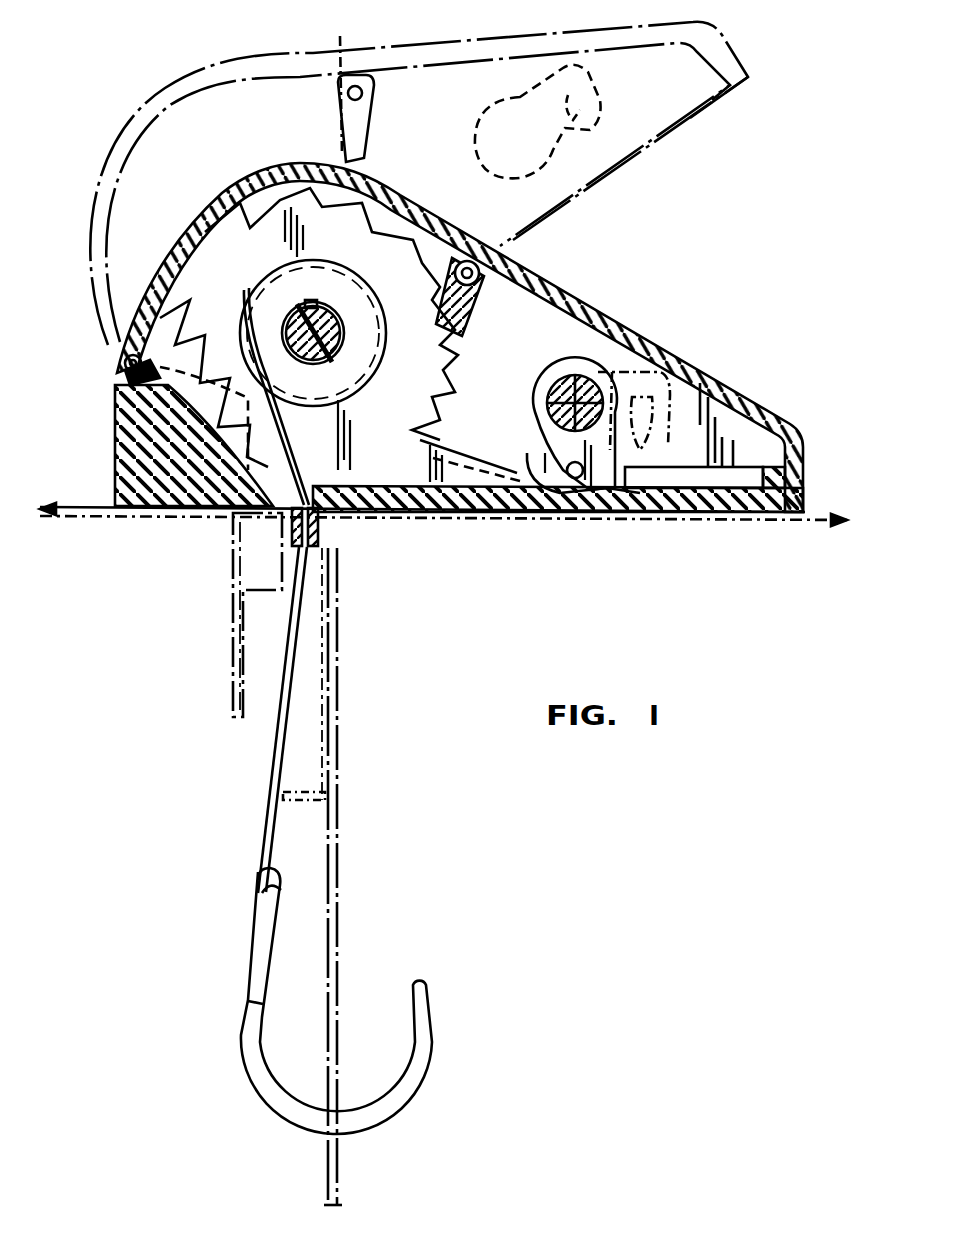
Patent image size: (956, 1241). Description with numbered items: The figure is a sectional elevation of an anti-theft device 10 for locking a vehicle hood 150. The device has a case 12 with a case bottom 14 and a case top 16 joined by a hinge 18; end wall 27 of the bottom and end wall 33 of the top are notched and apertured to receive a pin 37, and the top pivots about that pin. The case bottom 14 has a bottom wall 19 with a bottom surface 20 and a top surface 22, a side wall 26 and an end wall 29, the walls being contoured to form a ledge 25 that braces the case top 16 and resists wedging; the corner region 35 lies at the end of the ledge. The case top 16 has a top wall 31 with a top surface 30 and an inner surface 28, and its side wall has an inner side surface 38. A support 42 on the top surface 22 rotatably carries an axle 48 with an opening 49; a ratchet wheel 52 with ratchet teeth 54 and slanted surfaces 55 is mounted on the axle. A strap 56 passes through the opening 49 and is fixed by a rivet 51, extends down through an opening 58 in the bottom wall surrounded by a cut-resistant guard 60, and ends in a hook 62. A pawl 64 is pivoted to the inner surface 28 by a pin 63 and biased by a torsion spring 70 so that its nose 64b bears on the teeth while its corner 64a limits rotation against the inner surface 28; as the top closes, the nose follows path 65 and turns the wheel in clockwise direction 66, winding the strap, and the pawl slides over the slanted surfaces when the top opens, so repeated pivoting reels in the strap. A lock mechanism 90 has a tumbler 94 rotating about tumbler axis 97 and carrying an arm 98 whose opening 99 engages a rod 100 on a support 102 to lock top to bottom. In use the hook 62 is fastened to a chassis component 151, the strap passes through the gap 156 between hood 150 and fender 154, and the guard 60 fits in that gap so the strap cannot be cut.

The anti-theft device 10 is at (82, 148).
The case 12 is at (143, 513).
The case bottom 14 is at (113, 437).
The case top 16 is at (298, 55).
The hinge 18 is at (113, 350).
The bottom wall 19 is at (713, 500).
The bottom surface 20 is at (417, 517).
The top surface 22 is at (727, 467).
The ledge 25 is at (800, 485).
The side wall 26 is at (693, 503).
The end wall 27 is at (115, 397).
The inner surface 28 is at (608, 50).
The end wall 29 is at (782, 433).
The top surface 30 is at (590, 300).
The top wall 31 is at (623, 307).
The end wall 33 is at (133, 307).
The end wall corner 35 is at (798, 452).
The pin 37 is at (122, 362).
The inner side surface 38 is at (570, 317).
The support 42 is at (350, 473).
The axle 48 is at (340, 318).
The opening 49 is at (322, 358).
The rivet 51 is at (311, 300).
The ratchet wheel 52 is at (443, 370).
The ratchet teeth 54 is at (430, 397).
The slanted surfaces 55 is at (387, 197).
The strap 56 is at (247, 290).
The opening 58 is at (305, 478).
The guard 60 is at (290, 533).
The hook 62 is at (427, 1033).
The pin 63 is at (503, 247).
The pawl 64 is at (372, 130).
The corner 64a is at (470, 262).
The nose 64b is at (345, 150).
The path 65 is at (372, 180).
The clockwise direction 66 is at (433, 263).
The torsion spring 70 is at (483, 295).
The lock mechanism 90 is at (575, 154).
The tumbler 94 is at (590, 385).
The tumbler axis 97 is at (575, 403).
The arm 98 is at (663, 403).
The opening 99 is at (553, 487).
The rod 100 is at (573, 480).
The support 102 is at (493, 493).
The hood 150 is at (83, 502).
The component 151 is at (334, 857).
The fender 154 is at (817, 525).
The gap 156 is at (315, 580).